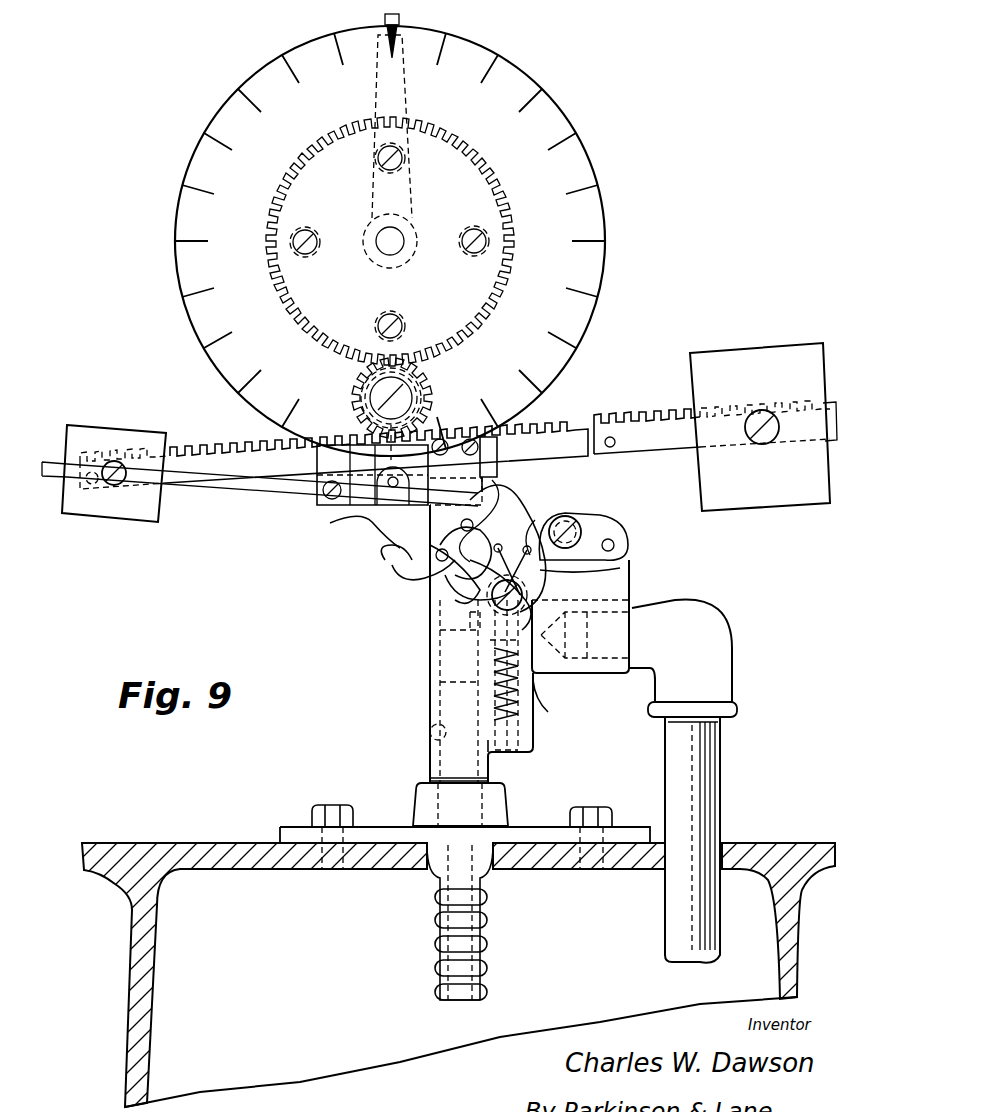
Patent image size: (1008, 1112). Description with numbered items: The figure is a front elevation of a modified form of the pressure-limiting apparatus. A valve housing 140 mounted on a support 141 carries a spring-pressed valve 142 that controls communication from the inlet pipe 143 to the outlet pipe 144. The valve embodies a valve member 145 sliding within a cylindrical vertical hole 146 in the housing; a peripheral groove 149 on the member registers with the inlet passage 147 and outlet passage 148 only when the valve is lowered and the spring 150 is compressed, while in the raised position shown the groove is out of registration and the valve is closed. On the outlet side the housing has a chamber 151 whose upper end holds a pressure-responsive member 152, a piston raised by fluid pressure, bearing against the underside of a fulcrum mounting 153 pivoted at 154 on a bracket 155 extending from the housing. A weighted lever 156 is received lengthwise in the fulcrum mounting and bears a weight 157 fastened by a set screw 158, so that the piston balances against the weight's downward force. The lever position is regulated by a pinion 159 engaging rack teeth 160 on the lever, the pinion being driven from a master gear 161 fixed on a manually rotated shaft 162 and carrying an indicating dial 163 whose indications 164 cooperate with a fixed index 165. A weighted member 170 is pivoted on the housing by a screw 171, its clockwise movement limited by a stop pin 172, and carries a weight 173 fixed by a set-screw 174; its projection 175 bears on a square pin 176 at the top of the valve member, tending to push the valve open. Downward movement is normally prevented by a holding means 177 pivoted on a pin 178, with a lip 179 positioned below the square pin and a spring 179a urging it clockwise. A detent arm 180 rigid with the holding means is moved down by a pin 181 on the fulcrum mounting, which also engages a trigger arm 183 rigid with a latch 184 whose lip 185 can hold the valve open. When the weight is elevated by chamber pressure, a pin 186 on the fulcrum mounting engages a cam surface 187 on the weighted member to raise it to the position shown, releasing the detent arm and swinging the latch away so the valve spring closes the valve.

The valve housing 140 is at (545, 680).
The support 141 is at (518, 833).
The spring-pressed valve 142 is at (535, 718).
The inlet pipe 143 is at (708, 803).
The outlet pipe 144 is at (455, 924).
The valve member 145 is at (498, 682).
The cylindrical vertical hole 146 is at (478, 632).
The inlet passage 147 is at (560, 675).
The outlet passage 148 is at (510, 643).
The peripheral groove 149 is at (580, 606).
The spring 150 is at (498, 702).
The chamber 151 is at (440, 745).
The pressure-responsive member 152 is at (462, 590).
The fulcrum mounting 153 is at (518, 432).
The pivot 154 is at (388, 496).
The bracket 155 is at (387, 522).
The weighted lever 156 is at (640, 430).
The weight 157 is at (713, 365).
The set screw 158 is at (762, 418).
The pinion 159 is at (422, 380).
The rack teeth 160 is at (185, 446).
The master gear 161 is at (485, 297).
The shaft 162 is at (394, 240).
The indicating dial 163 is at (528, 75).
The indications 164 is at (478, 72).
The fixed index 165 is at (398, 28).
The weighted member 170 is at (585, 522).
The screw 171 is at (625, 530).
The stop pin 172 is at (614, 545).
The weight 173 is at (88, 512).
The set-screw 174 is at (115, 485).
The projection 175 is at (500, 545).
The square pin 176 is at (530, 548).
The holding means 177 is at (620, 568).
The pin 178 is at (526, 597).
The lip 179 is at (560, 548).
The spring 179a is at (448, 578).
The detent arm 180 is at (470, 602).
The pin 181 is at (438, 560).
The trigger arm 183 is at (400, 548).
The latch 184 is at (626, 562).
The lip 185 is at (522, 568).
The pin 186 is at (472, 520).
The cam surface 187 is at (497, 455).